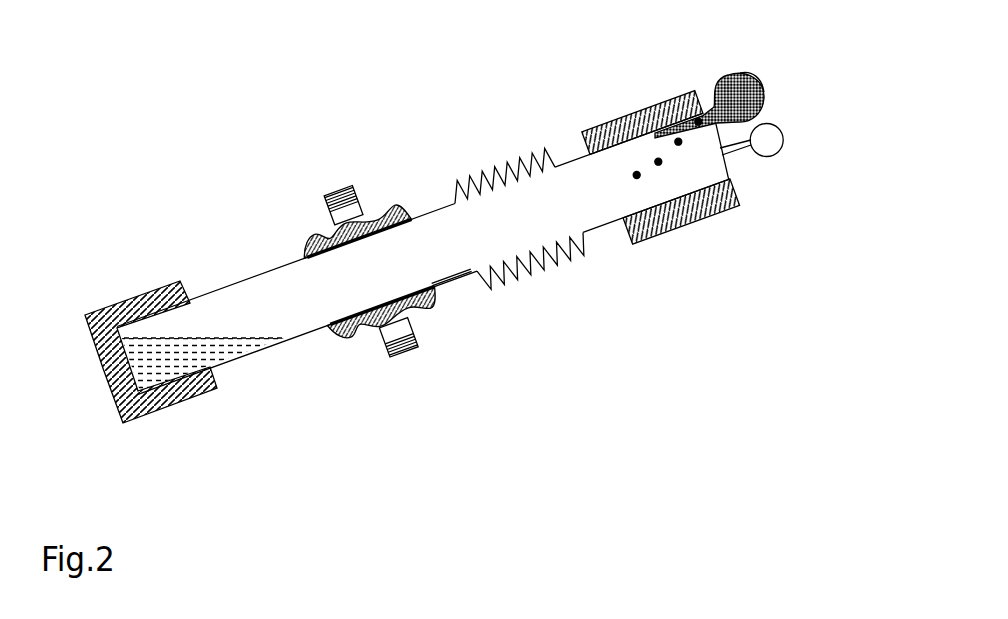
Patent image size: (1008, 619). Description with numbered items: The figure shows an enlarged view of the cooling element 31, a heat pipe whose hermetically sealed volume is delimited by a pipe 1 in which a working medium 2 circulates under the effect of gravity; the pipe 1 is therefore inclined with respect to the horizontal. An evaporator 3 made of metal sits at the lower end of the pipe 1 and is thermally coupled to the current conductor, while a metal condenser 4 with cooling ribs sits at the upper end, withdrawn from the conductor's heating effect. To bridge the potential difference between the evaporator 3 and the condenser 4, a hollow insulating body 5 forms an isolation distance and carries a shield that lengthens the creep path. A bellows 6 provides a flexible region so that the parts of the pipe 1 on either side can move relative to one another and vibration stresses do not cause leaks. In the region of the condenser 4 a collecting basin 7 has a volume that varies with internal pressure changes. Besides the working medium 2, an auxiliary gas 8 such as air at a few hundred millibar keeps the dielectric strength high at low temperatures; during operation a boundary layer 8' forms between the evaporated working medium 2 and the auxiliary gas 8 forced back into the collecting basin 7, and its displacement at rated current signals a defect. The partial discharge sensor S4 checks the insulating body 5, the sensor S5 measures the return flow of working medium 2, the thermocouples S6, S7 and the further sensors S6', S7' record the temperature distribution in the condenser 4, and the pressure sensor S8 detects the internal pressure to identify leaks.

The pipe 1 is at (243, 282).
The working medium 2 is at (190, 343).
The evaporator 3 is at (122, 302).
The condenser 4 is at (695, 210).
The hollow insulating body 5 is at (352, 327).
The bellows 6 is at (550, 265).
The collecting basin 7 is at (737, 75).
The auxiliary gas 8 is at (790, 56).
The boundary layer 8' is at (797, 188).
The cooling element 31 is at (523, 371).
The partial discharge sensor S4 is at (352, 188).
The flow sensor S5 is at (458, 283).
The temperature sensor S6 is at (505, 98).
The further temperature sensor S6' is at (582, 92).
The temperature sensor S7 is at (707, 62).
The further temperature sensor S7' is at (648, 74).
The pressure sensor S8 is at (783, 138).